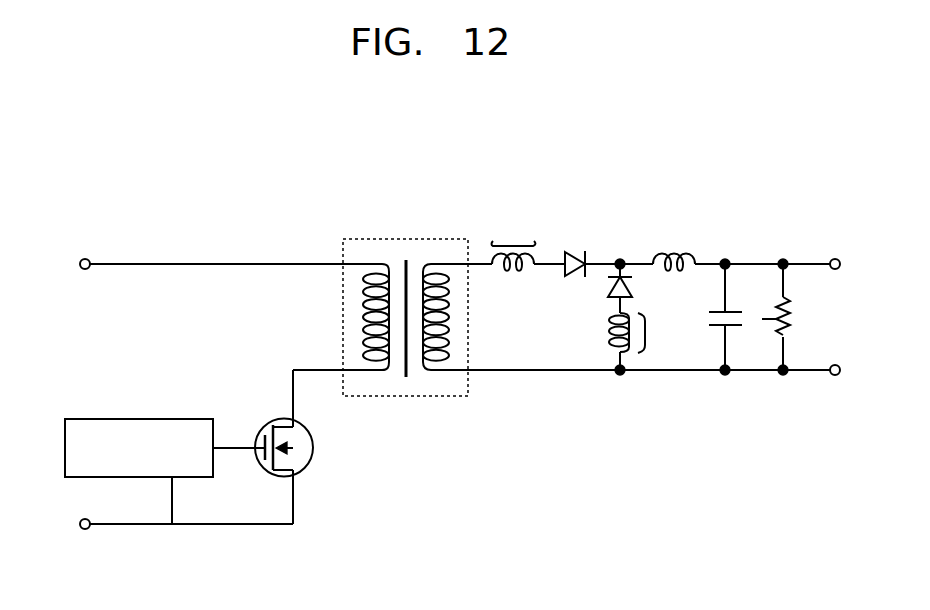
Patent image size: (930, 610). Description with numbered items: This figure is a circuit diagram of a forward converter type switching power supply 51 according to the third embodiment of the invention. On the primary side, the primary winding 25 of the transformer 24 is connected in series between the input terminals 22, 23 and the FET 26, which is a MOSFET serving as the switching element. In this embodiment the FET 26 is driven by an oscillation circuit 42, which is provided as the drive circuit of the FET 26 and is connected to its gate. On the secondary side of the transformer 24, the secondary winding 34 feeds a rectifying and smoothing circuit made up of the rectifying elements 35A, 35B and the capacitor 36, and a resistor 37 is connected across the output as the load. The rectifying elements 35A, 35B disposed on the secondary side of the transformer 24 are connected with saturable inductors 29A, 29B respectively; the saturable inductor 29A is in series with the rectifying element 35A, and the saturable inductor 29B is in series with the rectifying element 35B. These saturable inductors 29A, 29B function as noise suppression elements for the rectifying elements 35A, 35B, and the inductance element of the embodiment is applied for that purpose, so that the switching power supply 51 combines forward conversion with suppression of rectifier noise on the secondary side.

The input terminal 22 is at (83, 258).
The input terminal 23 is at (85, 530).
The transformer 24 is at (368, 238).
The primary winding 25 is at (362, 317).
The FET 26 is at (259, 433).
The saturable inductor 29A is at (505, 249).
The saturable inductor 29B is at (647, 333).
The secondary winding 34 is at (450, 317).
The rectifying element 35A is at (571, 250).
The rectifying element 35B is at (634, 290).
The capacitor 36 is at (731, 304).
The resistor 37 is at (789, 327).
The oscillation circuit 42 is at (172, 419).
The switching power supply 51 is at (233, 195).